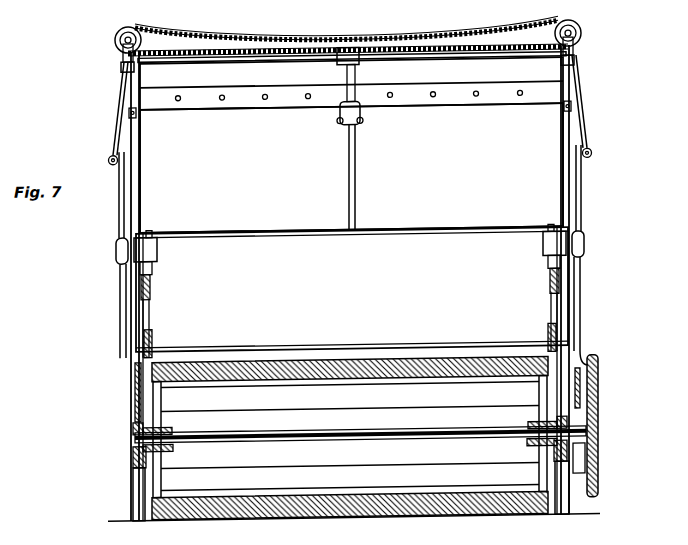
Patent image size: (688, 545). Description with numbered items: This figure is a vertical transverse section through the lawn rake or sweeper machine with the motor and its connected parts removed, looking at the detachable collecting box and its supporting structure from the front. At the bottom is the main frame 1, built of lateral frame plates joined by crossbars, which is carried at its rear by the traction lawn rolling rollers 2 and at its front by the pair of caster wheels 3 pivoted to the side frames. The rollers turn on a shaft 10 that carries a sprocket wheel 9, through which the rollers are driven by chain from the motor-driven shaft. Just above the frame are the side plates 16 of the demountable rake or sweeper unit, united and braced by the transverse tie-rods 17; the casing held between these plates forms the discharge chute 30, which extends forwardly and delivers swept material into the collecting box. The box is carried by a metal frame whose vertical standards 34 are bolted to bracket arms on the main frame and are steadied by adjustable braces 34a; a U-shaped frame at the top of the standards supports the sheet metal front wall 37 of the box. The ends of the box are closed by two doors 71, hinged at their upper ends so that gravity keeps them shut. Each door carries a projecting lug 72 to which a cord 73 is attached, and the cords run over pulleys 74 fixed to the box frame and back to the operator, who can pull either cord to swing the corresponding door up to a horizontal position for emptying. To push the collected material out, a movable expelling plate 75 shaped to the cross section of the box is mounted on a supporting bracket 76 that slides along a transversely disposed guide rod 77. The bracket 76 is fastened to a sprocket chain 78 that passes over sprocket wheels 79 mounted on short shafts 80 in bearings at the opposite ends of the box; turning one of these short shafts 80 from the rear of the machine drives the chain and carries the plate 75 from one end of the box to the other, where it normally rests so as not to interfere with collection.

The main frame 1 is at (137, 402).
The traction lawn rolling rollers 2 is at (440, 505).
The caster wheels 3 is at (137, 508).
The sprocket wheel 9 is at (599, 395).
The shaft 10 is at (133, 440).
The side plates 16 is at (150, 287).
The tie-rods 17 is at (393, 349).
The discharge chute 30 is at (351, 168).
The vertical standards 34 is at (136, 198).
The adjustable braces 34a is at (118, 290).
The front wall 37 is at (448, 142).
The doors 71 is at (133, 220).
The projecting lug 72 is at (112, 166).
The cord 73 is at (121, 97).
The pulleys 74 is at (121, 67).
The expelling plate 75 is at (358, 184).
The supporting bracket 76 is at (356, 80).
The guide rod 77 is at (455, 63).
The sprocket chain 78 is at (278, 44).
The sprocket wheels 79 is at (143, 44).
The short shafts 80 is at (584, 39).